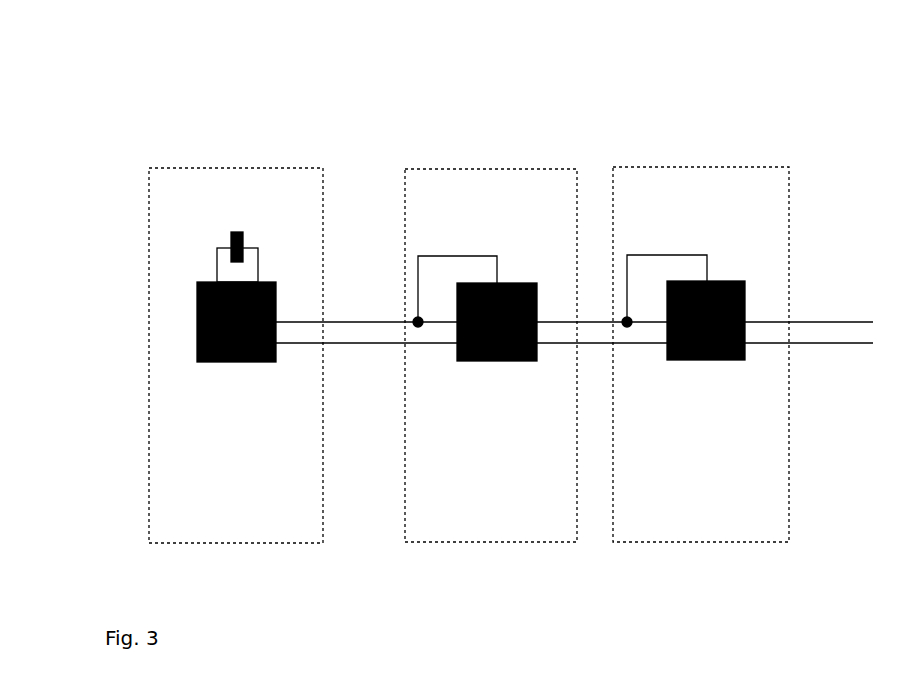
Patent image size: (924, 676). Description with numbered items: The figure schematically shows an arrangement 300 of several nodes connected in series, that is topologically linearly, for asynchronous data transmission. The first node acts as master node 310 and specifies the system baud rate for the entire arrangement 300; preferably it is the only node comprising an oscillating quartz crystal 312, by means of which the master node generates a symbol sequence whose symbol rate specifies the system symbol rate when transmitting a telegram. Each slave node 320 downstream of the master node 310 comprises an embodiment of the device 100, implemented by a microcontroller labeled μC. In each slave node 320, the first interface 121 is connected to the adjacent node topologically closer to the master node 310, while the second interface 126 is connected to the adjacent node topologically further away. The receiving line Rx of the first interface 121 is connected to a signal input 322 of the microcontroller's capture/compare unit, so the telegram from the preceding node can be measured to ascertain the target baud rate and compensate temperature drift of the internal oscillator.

The arrangement 300 is at (142, 46).
The master node 310 is at (306, 168).
The oscillating quartz crystal 312 is at (228, 240).
The slave node 320 is at (432, 169).
The signal input 322 is at (487, 256).
The device 100 is at (528, 283).
The first interface 121 is at (441, 370).
The second interface 126 is at (547, 370).